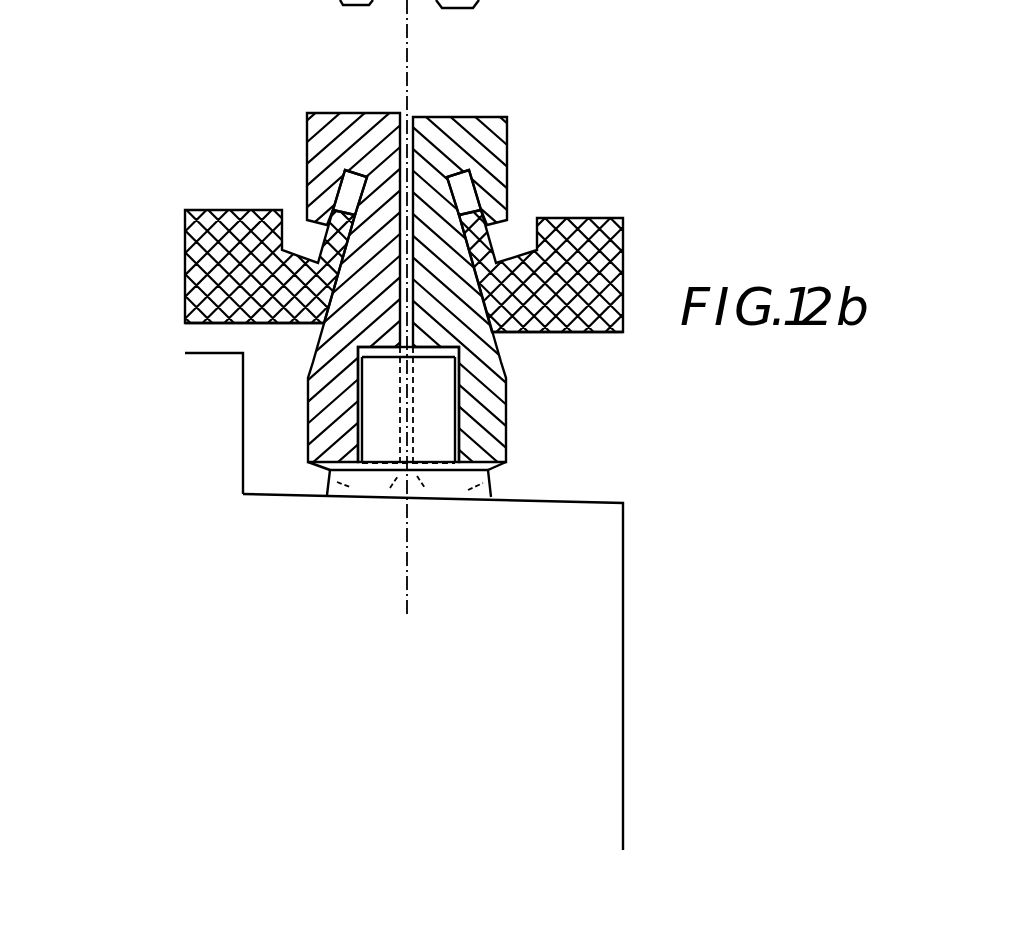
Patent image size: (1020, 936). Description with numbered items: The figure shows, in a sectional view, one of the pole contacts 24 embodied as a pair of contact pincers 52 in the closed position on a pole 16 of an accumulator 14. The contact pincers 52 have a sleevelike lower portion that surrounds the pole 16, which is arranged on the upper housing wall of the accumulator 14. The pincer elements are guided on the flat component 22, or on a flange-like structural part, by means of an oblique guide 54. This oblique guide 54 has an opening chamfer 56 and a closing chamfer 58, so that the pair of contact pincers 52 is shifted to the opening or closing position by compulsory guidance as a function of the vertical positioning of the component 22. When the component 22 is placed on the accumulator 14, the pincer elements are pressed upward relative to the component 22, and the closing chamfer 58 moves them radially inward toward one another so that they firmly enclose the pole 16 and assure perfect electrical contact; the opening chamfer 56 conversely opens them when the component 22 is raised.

The pole contact 24 is at (582, 125).
The oblique guide 54 is at (340, 187).
The component 22 is at (215, 212).
The opening chamfer 56 is at (493, 233).
The closing chamfer 58 is at (318, 343).
The contact pincers 52 is at (285, 399).
The pole 16 is at (435, 423).
The accumulator 14 is at (367, 582).